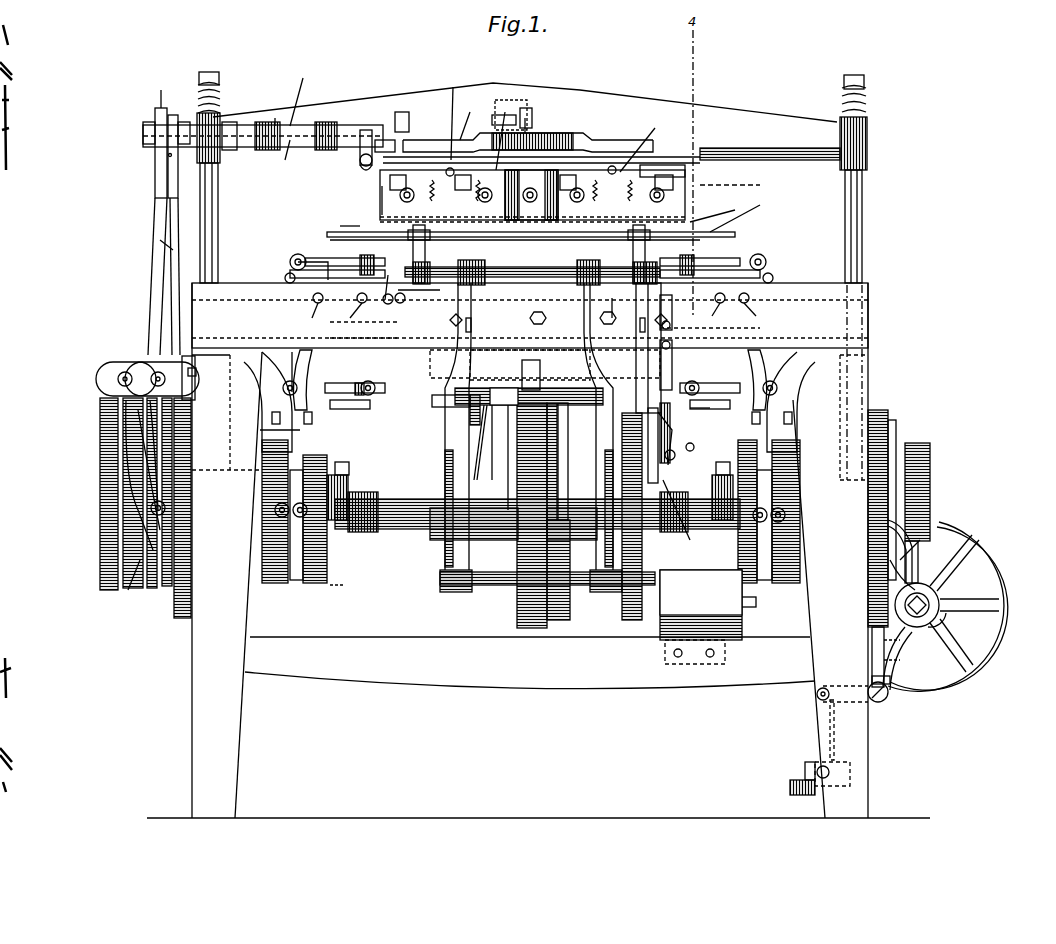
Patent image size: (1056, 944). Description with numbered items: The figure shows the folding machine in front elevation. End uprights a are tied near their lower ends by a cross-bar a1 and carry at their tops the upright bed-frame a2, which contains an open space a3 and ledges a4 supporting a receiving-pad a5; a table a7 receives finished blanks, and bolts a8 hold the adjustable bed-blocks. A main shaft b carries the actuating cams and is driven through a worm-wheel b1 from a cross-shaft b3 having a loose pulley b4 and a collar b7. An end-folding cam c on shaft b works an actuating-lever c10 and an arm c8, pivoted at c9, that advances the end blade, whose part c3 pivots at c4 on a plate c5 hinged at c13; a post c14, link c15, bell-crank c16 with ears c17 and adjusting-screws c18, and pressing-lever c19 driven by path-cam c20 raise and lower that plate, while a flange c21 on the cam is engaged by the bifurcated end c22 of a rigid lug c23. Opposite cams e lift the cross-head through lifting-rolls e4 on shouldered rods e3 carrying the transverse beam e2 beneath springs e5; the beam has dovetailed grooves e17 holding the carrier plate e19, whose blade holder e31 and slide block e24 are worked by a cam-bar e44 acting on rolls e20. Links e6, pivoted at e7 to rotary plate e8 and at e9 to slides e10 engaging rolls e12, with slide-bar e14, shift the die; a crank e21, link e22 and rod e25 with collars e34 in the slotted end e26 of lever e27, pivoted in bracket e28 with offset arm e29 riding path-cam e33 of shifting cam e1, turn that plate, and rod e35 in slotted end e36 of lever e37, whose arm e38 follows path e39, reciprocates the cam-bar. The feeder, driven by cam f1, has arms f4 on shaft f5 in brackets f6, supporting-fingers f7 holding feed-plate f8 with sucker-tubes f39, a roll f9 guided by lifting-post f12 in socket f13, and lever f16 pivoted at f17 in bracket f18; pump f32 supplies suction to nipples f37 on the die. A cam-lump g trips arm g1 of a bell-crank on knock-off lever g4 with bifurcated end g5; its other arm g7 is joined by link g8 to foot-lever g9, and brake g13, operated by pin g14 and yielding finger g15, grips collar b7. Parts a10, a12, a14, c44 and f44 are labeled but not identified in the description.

The end uprights a is at (192, 688).
The cross-bar a1 is at (425, 684).
The bed-frame a2 is at (237, 283).
The open space a3 is at (500, 415).
The ledges a4 is at (510, 292).
The receiving-pad a5 is at (532, 272).
The table a7 is at (365, 333).
The bolts a8 is at (533, 316).
The guide a10 is at (530, 360).
The rod a12 is at (614, 303).
The rods a14 is at (491, 457).
The main shaft b is at (388, 530).
The worm-wheel b1 is at (932, 455).
The cross-shaft b3 is at (930, 604).
The loose pulley b4 is at (957, 606).
The collar b7 is at (940, 618).
The cam c is at (318, 590).
The end blade part c3 is at (358, 298).
The pivot c4 is at (540, 255).
The plate c5 is at (768, 236).
The arm c8 is at (345, 270).
The pivot c9 is at (534, 259).
The actuating-lever c10 is at (282, 470).
The pivot c13 is at (313, 298).
The post c14 is at (691, 401).
The link c15 is at (530, 383).
The bell-crank c16 is at (370, 394).
The ears c17 is at (272, 414).
The adjusting-screws c18 is at (280, 428).
The pressing-lever c19 is at (285, 440).
The path-cam c20 is at (302, 585).
The flange c21 is at (745, 620).
The bifurcated end c22 is at (328, 446).
The rigid lug c23 is at (318, 372).
The pin c44 is at (700, 452).
The cams e is at (888, 425).
The cam e1 is at (135, 580).
The transverse beam e2 is at (270, 117).
The shouldered rods e3 is at (862, 190).
The lifting-rolls e4 is at (196, 412).
The springs e5 is at (220, 100).
The links e6 is at (622, 85).
The inner end pivots e7 is at (580, 80).
The rotary plate e8 is at (218, 195).
The outer end pivots e9 is at (445, 160).
The slides e10 is at (680, 98).
The rolls e12 is at (720, 105).
The slide-bar e14 is at (765, 182).
The dovetailed grooves e17 is at (364, 152).
The carrier plate e19 is at (668, 160).
The rolls e20 is at (450, 177).
The crank e21 is at (530, 112).
The link e22 is at (505, 112).
The slide block e24 is at (383, 140).
The rod e25 is at (303, 91).
The slotted end e26 is at (162, 88).
The lever e27 is at (150, 285).
The bracket e28 is at (112, 378).
The offset arm e29 is at (104, 406).
The front blade holder e31 is at (382, 188).
The path-cam e33 is at (104, 468).
The collars e34 is at (150, 126).
The rod e35 is at (284, 161).
The slotted upper end e36 is at (168, 156).
The lever e37 is at (173, 257).
The lateral arm e38 is at (118, 515).
The path e39 is at (150, 588).
The cam-bar e44 is at (640, 142).
The cam f1 is at (622, 606).
The arms f4 is at (443, 415).
The shaft f5 is at (562, 572).
The brackets f6 is at (465, 446).
The supporting-fingers f7 is at (531, 233).
The feed-plate f8 is at (735, 218).
The roll f9 is at (757, 207).
The lifting-post f12 is at (628, 292).
The socket f13 is at (710, 339).
The lever f16 is at (660, 448).
The pivot f17 is at (712, 213).
The bracket f18 is at (654, 348).
The pump f32 is at (660, 640).
The nipples f37 is at (532, 215).
The sucker-tubes f39 is at (425, 255).
The link f44 is at (678, 518).
The cam-lump g is at (868, 620).
The arm g1 is at (870, 626).
The knock-off lever g4 is at (888, 682).
The bifurcated end g5 is at (915, 650).
The arm g7 is at (840, 688).
The link g8 is at (828, 730).
The foot-lever g9 is at (808, 768).
The brake g13 is at (922, 600).
The pin g14 is at (930, 508).
The yielding finger g15 is at (929, 553).